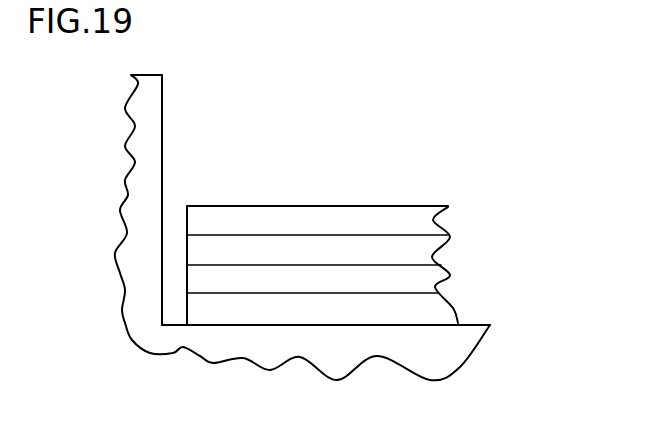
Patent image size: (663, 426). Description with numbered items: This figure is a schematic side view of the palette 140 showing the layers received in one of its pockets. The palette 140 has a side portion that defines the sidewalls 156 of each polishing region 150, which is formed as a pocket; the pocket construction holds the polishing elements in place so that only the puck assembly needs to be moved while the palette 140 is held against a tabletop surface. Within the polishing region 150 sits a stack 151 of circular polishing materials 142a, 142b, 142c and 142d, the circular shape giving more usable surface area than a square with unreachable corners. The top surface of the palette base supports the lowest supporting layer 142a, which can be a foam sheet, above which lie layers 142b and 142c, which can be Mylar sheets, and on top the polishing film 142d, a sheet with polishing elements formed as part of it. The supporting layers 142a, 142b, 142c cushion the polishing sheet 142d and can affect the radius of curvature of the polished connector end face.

The palette 140 is at (147, 73).
The sidewalls 156 is at (163, 95).
The polishing region 150 is at (337, 160).
The stack 151 is at (407, 203).
The foam sheet 142a is at (436, 313).
The Mylar sheet 142b is at (428, 283).
The Mylar sheet 142c is at (430, 257).
The polishing film 142d is at (436, 220).